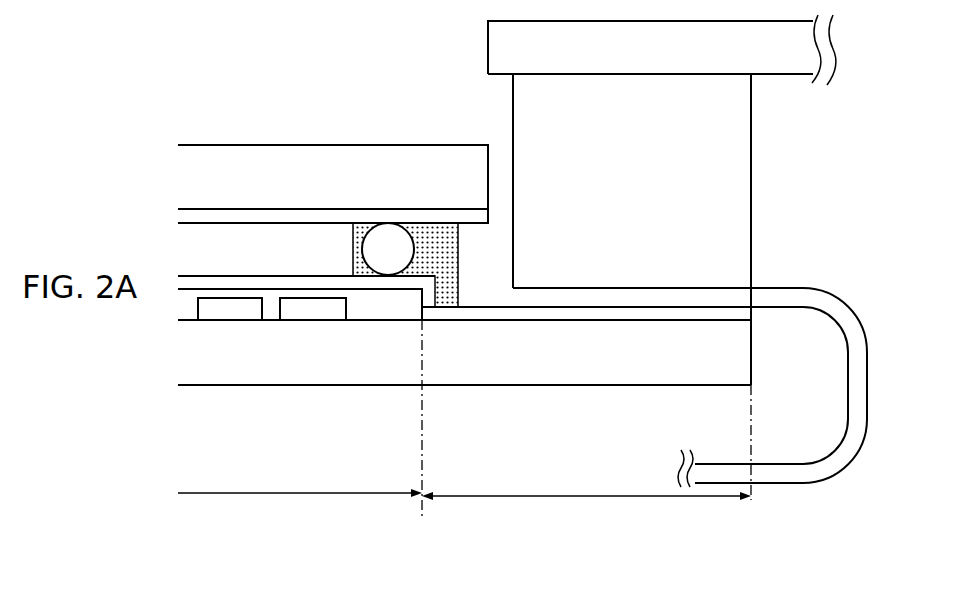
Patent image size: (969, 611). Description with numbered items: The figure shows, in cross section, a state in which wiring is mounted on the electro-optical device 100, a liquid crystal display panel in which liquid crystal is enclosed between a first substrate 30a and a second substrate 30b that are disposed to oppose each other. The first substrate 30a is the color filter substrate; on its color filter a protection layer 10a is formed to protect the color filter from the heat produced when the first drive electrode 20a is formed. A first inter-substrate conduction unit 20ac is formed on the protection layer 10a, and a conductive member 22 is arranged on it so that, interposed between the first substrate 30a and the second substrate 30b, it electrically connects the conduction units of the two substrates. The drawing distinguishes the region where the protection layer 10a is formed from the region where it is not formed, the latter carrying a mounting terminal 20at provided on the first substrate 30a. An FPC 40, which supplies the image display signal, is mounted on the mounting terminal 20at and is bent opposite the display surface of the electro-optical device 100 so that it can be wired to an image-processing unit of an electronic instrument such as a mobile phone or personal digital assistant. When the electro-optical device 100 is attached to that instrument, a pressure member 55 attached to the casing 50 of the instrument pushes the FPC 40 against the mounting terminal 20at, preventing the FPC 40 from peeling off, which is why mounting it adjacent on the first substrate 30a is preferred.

The electro-optical device 100 is at (234, 123).
The protection layer 10a is at (188, 315).
The first drive electrode 20a is at (347, 270).
The first inter-substrate conduction unit 20ac is at (418, 295).
The mounting terminal 20at is at (750, 328).
The conductive member 22 is at (394, 248).
The first substrate 30a is at (507, 368).
The second substrate 30b is at (453, 148).
The FPC 40 is at (802, 290).
The casing 50 is at (787, 60).
The pressure member 55 is at (736, 200).